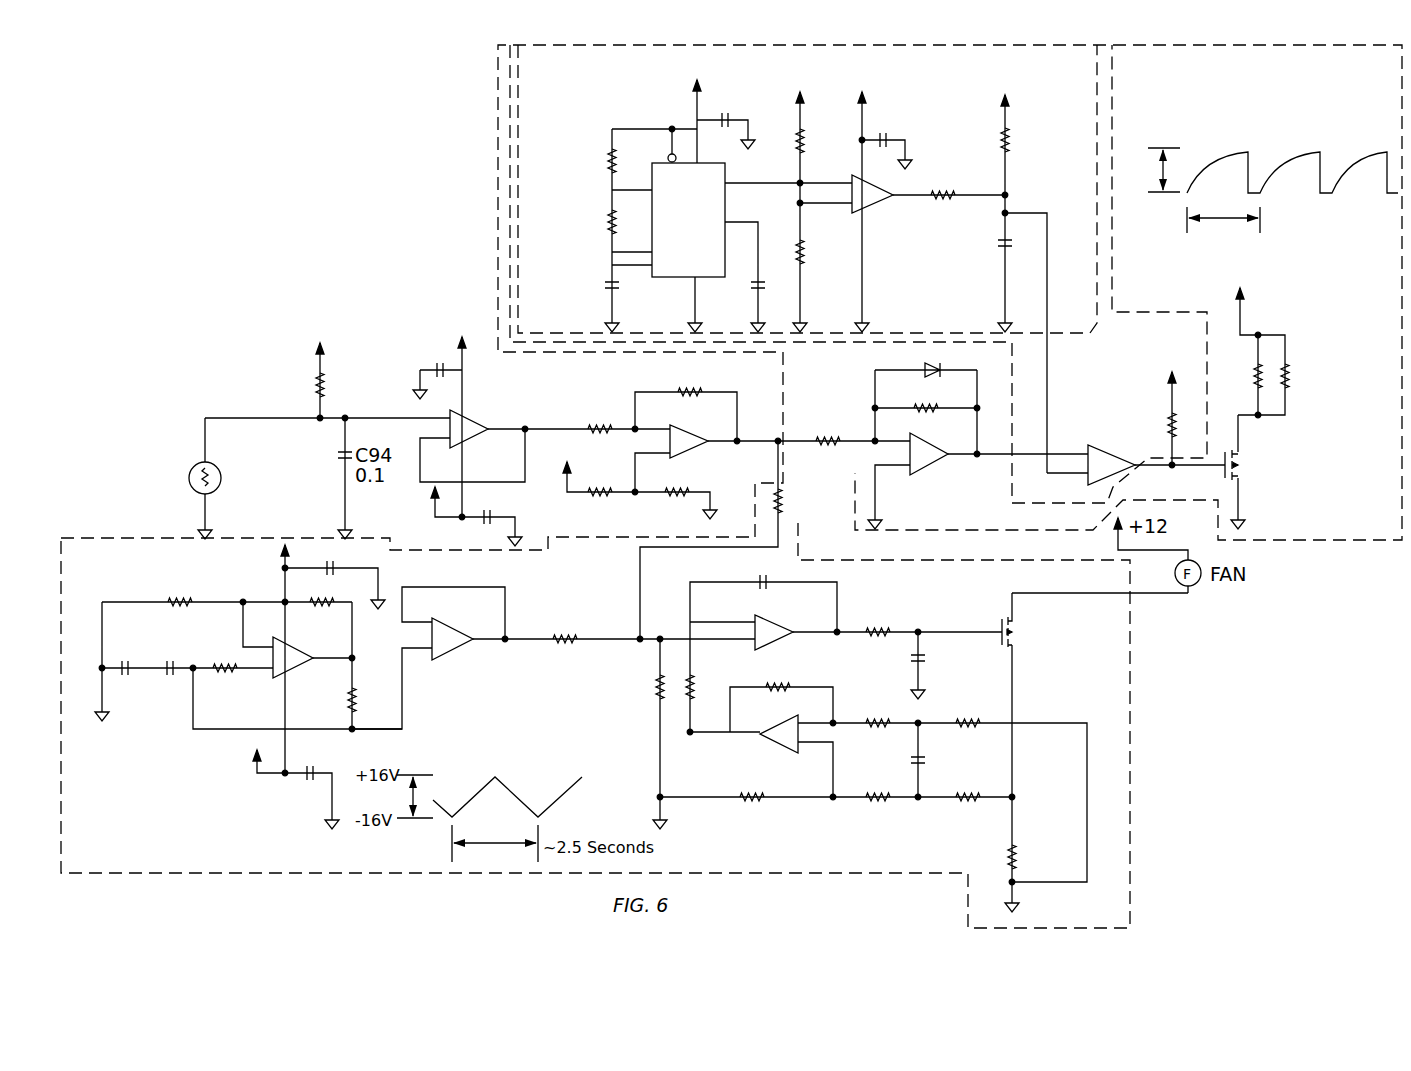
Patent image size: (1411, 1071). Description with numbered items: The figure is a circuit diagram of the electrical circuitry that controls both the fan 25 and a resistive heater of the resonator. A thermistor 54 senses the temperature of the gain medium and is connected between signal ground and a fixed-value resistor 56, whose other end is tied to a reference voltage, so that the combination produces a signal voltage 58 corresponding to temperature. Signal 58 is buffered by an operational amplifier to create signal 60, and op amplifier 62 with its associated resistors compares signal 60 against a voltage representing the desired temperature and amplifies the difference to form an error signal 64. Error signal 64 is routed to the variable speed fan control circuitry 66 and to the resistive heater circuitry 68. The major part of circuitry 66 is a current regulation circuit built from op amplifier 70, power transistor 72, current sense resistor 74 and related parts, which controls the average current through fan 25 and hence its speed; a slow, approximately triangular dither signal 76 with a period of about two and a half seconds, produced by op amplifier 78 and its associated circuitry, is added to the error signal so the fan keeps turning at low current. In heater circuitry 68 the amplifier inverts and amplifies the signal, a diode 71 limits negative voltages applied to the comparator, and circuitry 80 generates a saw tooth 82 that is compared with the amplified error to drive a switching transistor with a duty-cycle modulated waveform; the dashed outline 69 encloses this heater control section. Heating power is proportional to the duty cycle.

The fan 25 is at (1296, 358).
The thermistor 54 is at (218, 533).
The fixed-value resistor 56 is at (310, 382).
The signal voltage 58 is at (197, 412).
The buffered signal 60 is at (545, 427).
The op amplifier 62 is at (683, 440).
The error signal 64 is at (753, 438).
The variable speed fan control circuitry 66 is at (1140, 832).
The resistive heater control circuitry 68 is at (498, 115).
The pulse width modulator circuit 69 is at (510, 76).
The op amplifier 70 is at (910, 470).
The diode D7 71 is at (941, 369).
The power transistor 72 is at (1030, 664).
The current sense resistor 74 is at (997, 866).
The dither signal 76 is at (532, 650).
The op amplifier 78 is at (275, 695).
The saw tooth generator circuitry 80 is at (1097, 323).
The saw tooth 82 is at (1062, 214).